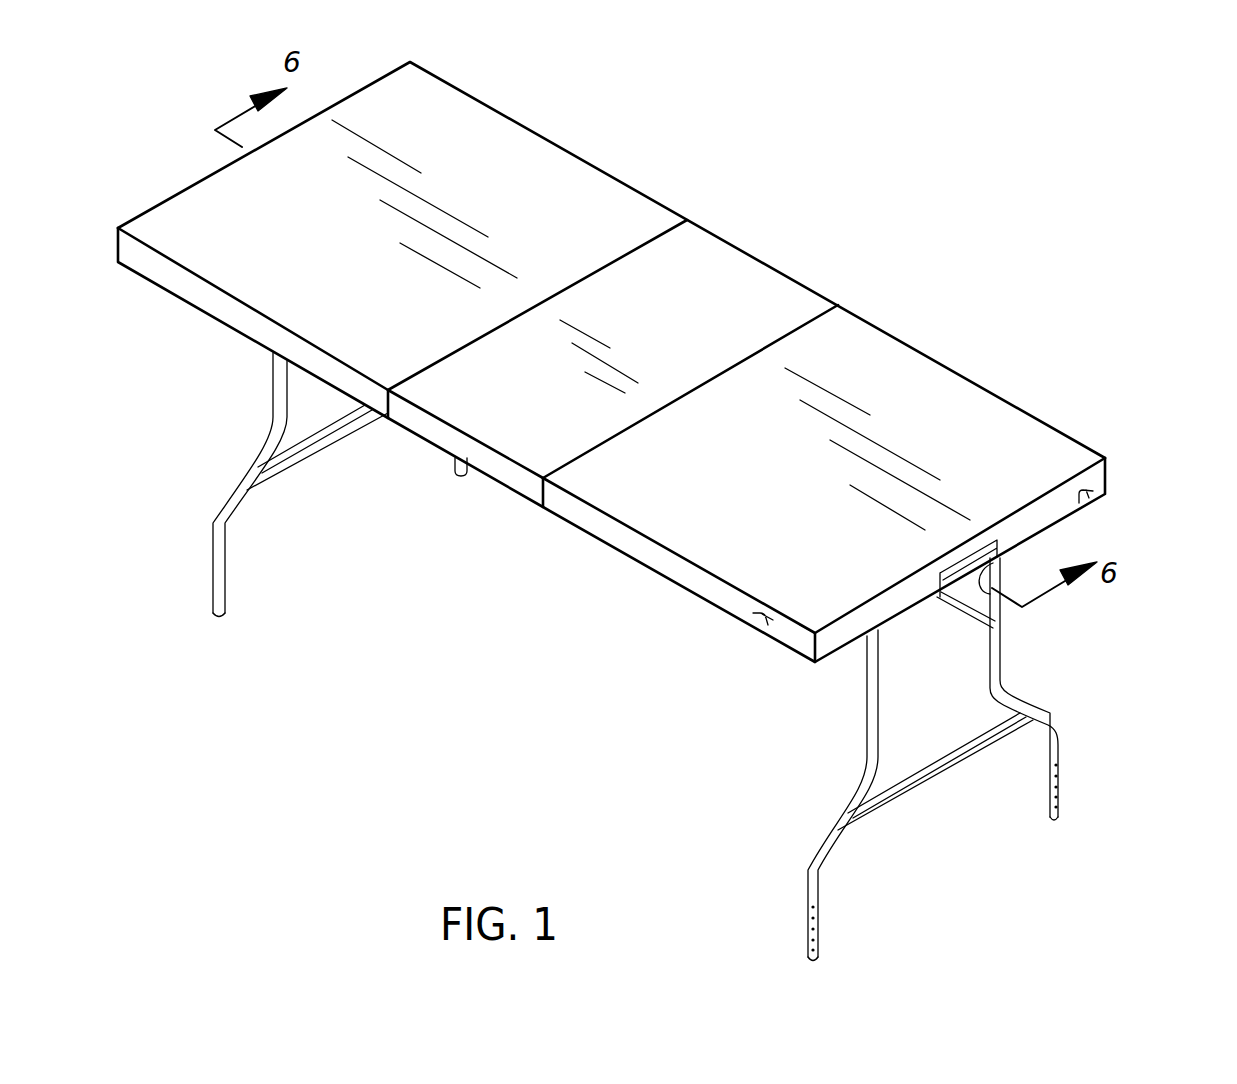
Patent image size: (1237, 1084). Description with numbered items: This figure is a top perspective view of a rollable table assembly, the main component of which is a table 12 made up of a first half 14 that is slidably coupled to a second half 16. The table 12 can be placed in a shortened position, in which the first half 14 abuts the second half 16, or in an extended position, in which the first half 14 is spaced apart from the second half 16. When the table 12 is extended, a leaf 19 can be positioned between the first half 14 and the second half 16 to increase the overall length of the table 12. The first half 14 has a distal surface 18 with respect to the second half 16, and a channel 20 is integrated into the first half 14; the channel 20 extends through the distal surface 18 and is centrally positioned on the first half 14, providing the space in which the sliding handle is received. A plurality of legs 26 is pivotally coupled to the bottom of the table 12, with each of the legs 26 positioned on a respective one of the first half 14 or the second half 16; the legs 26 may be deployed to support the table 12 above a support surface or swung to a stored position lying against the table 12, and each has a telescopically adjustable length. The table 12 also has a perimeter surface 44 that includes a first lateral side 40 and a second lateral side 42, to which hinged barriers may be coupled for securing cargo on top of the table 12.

The table 12 is at (573, 147).
The first half 14 is at (875, 367).
The second half 16 is at (443, 110).
The distal surface 18 is at (1090, 500).
The leaf 19 is at (750, 293).
The channel 20 is at (985, 588).
The legs 26 is at (277, 417).
The first lateral side 40 is at (803, 647).
The second lateral side 42 is at (1100, 453).
The perimeter surface 44 is at (763, 620).